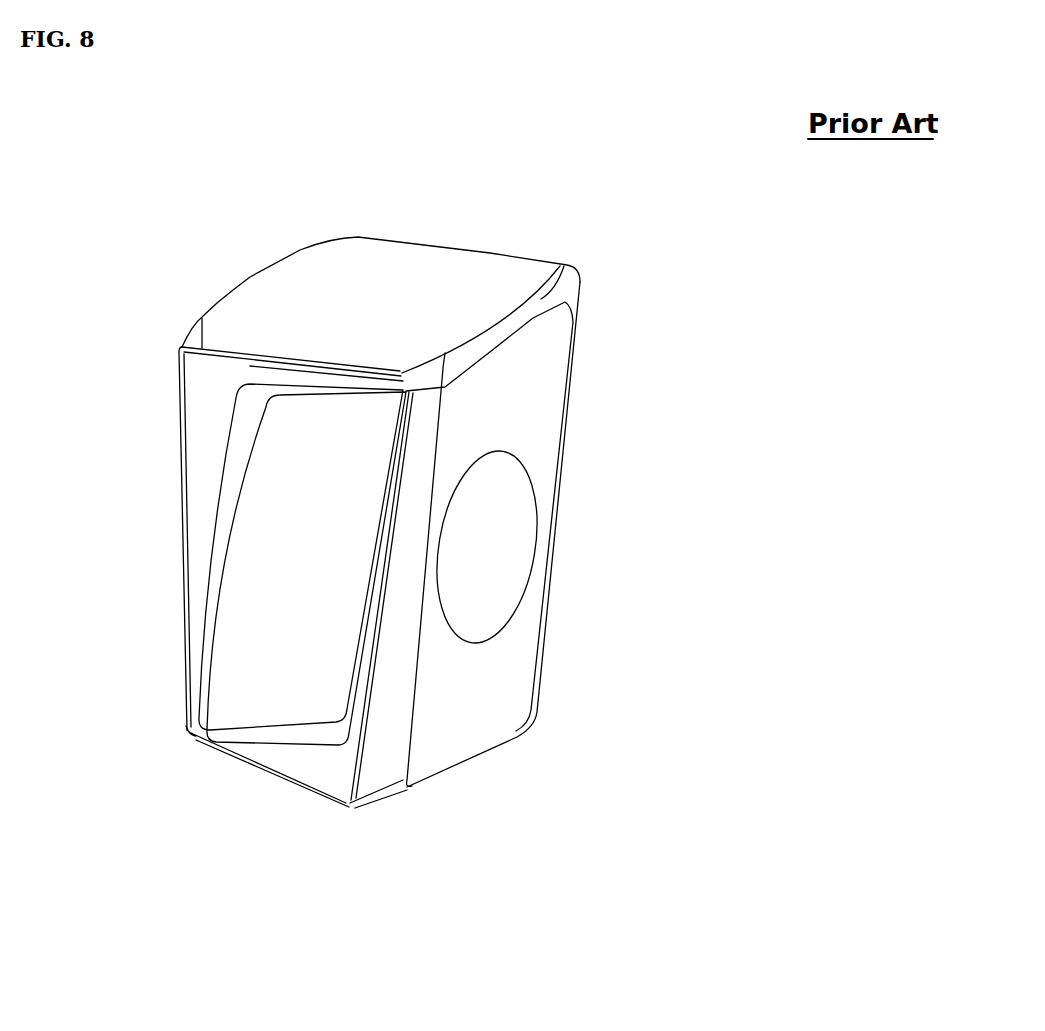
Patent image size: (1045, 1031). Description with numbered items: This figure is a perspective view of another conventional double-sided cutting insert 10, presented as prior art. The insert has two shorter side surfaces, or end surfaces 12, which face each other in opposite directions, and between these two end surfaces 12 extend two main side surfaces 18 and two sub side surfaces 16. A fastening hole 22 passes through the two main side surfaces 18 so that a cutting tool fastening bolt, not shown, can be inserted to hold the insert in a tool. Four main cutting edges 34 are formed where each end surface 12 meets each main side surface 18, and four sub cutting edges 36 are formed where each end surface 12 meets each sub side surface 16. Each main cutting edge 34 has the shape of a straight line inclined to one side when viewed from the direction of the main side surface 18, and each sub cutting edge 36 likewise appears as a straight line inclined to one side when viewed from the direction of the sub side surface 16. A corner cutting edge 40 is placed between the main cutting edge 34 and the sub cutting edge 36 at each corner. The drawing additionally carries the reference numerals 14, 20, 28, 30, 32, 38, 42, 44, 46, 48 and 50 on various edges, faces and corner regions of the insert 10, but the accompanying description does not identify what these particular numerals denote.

The double-sided cutting insert 10 is at (679, 224).
The end surface 12 is at (249, 512).
The side surface 14 is at (281, 300).
The sub side surface 16 is at (438, 268).
The main side surface 18 is at (530, 365).
The chamfer surface 20 is at (507, 318).
The fastening hole 22 is at (510, 527).
The corner edge 28 is at (182, 345).
The lower corner 30 is at (187, 733).
The side face 32 is at (168, 438).
The main cutting edge 34 is at (180, 577).
The sub cutting edge 36 is at (247, 763).
The corner radius edge 38 is at (180, 350).
The corner cutting edge 40 is at (178, 355).
The edge portion 42 is at (190, 745).
The fillet edge 44 is at (203, 465).
The recess rim 46 is at (230, 577).
The recess floor 48 is at (244, 551).
The bottom side face 50 is at (390, 690).